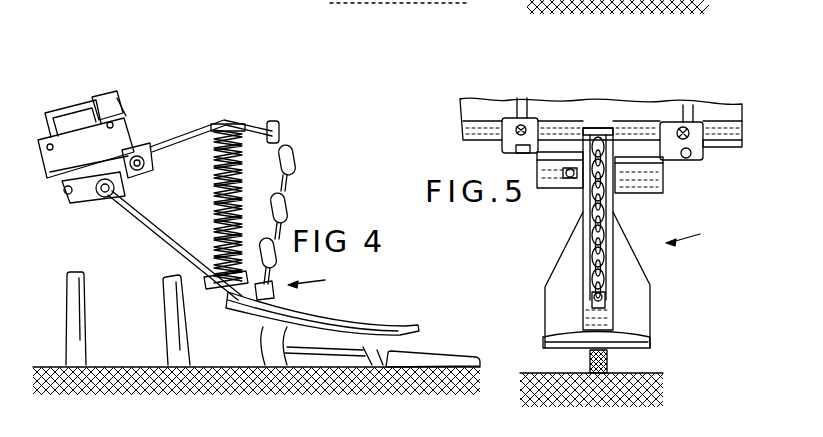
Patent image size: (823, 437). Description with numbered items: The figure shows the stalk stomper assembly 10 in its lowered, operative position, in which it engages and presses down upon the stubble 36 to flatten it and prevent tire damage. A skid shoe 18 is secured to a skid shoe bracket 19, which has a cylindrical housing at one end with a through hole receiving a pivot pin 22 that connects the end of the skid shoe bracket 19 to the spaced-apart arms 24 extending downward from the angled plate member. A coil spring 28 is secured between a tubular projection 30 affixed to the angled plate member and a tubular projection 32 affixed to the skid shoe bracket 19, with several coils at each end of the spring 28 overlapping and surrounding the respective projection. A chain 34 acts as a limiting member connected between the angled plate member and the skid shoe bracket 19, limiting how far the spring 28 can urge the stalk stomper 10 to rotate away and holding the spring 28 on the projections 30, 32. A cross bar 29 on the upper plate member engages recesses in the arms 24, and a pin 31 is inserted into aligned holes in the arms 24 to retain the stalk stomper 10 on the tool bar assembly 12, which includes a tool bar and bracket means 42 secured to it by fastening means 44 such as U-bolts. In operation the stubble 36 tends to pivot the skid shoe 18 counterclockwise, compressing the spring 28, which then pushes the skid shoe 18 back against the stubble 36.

In FIG. 4, the stalk stomper assembly 10 is at (318, 279).
In FIG. 5, the stalk stomper assembly 10 is at (695, 237).
In FIG. 4, the tool bar assembly 12 is at (53, 112).
In FIG. 5, the tool bar assembly 12 is at (553, 107).
In FIG. 4, the skid shoe 18 is at (411, 323).
In FIG. 5, the skid shoe 18 is at (637, 286).
In FIG. 4, the skid shoe bracket 19 is at (330, 313).
In FIG. 5, the skid shoe bracket 19 is at (583, 257).
In FIG. 4, the pivot pin 22 is at (107, 198).
In FIG. 4, the arms 24 is at (79, 203).
In FIG. 4, the coil spring 28 is at (233, 197).
In FIG. 4, the cross bar 29 is at (66, 195).
In FIG. 4, the tubular projection 30 is at (215, 147).
In FIG. 4, the pin 31 is at (136, 156).
In FIG. 5, the pin 31 is at (562, 186).
In FIG. 4, the tubular projection 32 is at (203, 273).
In FIG. 4, the chain 34 is at (292, 168).
In FIG. 5, the chain 34 is at (613, 227).
In FIG. 4, the stubble 36 is at (67, 320).
In FIG. 5, the stubble 36 is at (589, 362).
In FIG. 4, the bracket means 42 is at (53, 166).
In FIG. 5, the bracket means 42 is at (657, 178).
In FIG. 4, the fastening means 44 is at (108, 106).
In FIG. 5, the fastening means 44 is at (695, 113).